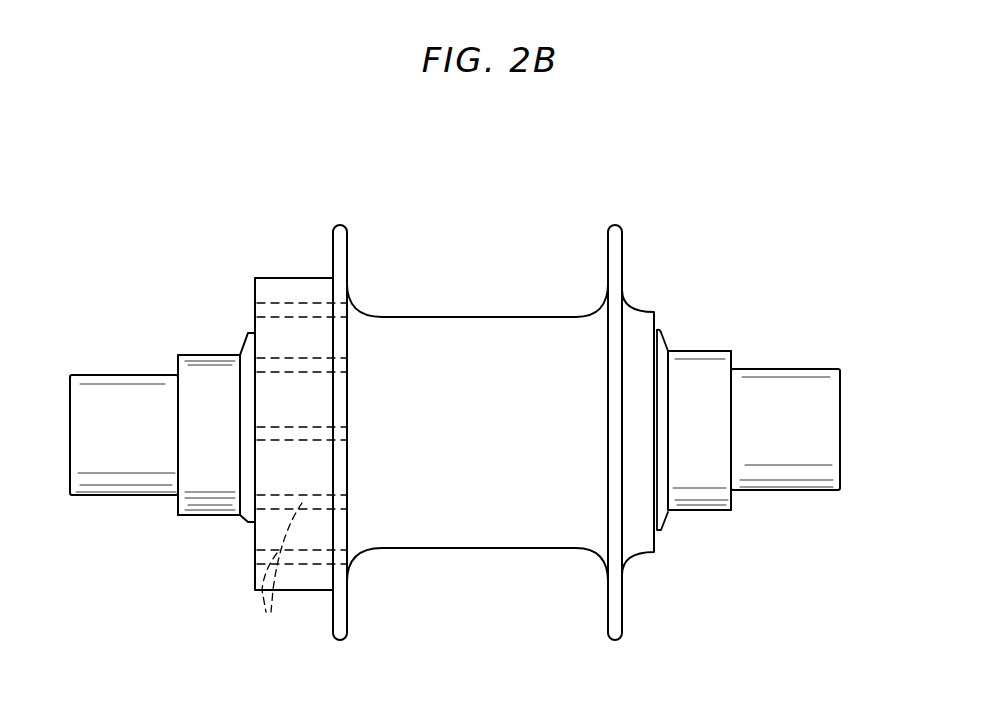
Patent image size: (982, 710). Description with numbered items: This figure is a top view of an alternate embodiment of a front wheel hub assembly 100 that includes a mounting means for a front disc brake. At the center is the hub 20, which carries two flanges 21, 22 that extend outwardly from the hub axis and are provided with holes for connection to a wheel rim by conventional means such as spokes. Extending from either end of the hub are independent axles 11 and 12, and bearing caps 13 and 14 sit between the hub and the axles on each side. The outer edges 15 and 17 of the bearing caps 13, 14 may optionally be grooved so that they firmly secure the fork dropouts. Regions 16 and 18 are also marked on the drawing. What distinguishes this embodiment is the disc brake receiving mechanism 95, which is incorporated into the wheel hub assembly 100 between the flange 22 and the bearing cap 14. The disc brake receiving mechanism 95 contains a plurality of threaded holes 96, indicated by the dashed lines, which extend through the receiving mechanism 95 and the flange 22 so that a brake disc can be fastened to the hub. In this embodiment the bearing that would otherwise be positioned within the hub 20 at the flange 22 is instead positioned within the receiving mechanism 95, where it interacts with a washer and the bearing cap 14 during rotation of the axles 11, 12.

The wheel hub assembly 100 is at (457, 188).
The axle 11 is at (785, 369).
The axle 12 is at (116, 375).
The bearing cap 13 is at (698, 351).
The bearing cap 14 is at (204, 355).
The outer edge 15 is at (731, 502).
The first end cap 16 is at (668, 515).
The outer edge 17 is at (178, 504).
The second end cap 18 is at (255, 533).
The hub 20 is at (509, 326).
The flange 21 is at (615, 225).
The flange 22 is at (339, 225).
The disc brake receiving mechanism 95 is at (307, 590).
The threaded holes 96 is at (276, 581).